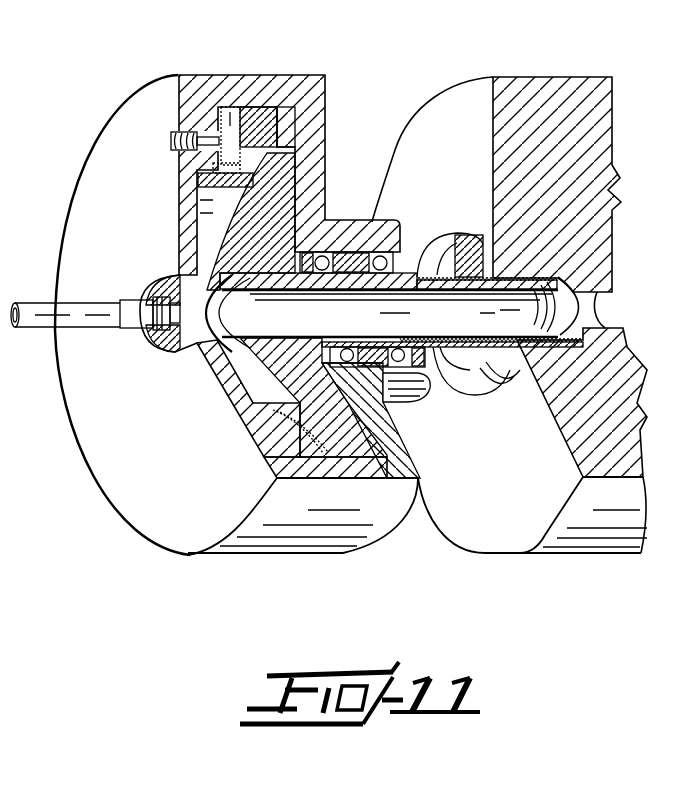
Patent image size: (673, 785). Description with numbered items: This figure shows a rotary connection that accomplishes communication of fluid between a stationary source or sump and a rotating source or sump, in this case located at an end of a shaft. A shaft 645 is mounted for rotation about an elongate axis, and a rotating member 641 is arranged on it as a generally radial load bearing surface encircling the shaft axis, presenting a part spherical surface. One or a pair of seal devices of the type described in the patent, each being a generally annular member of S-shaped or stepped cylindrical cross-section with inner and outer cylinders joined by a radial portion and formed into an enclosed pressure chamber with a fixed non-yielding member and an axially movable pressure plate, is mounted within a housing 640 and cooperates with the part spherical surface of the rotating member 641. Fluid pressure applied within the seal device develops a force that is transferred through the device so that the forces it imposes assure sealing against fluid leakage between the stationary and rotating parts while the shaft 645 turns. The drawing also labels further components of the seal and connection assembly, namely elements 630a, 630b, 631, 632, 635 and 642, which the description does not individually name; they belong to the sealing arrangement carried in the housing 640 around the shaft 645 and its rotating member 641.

The housing 640 is at (270, 565).
The rotating member 641 is at (143, 64).
The casing cover 631 is at (192, 102).
The seal 632 is at (233, 125).
The seal ring 635 is at (262, 120).
The seal face 630a is at (286, 137).
The seal face 630b is at (195, 172).
The impeller 642 is at (268, 187).
The shaft 645 is at (515, 300).